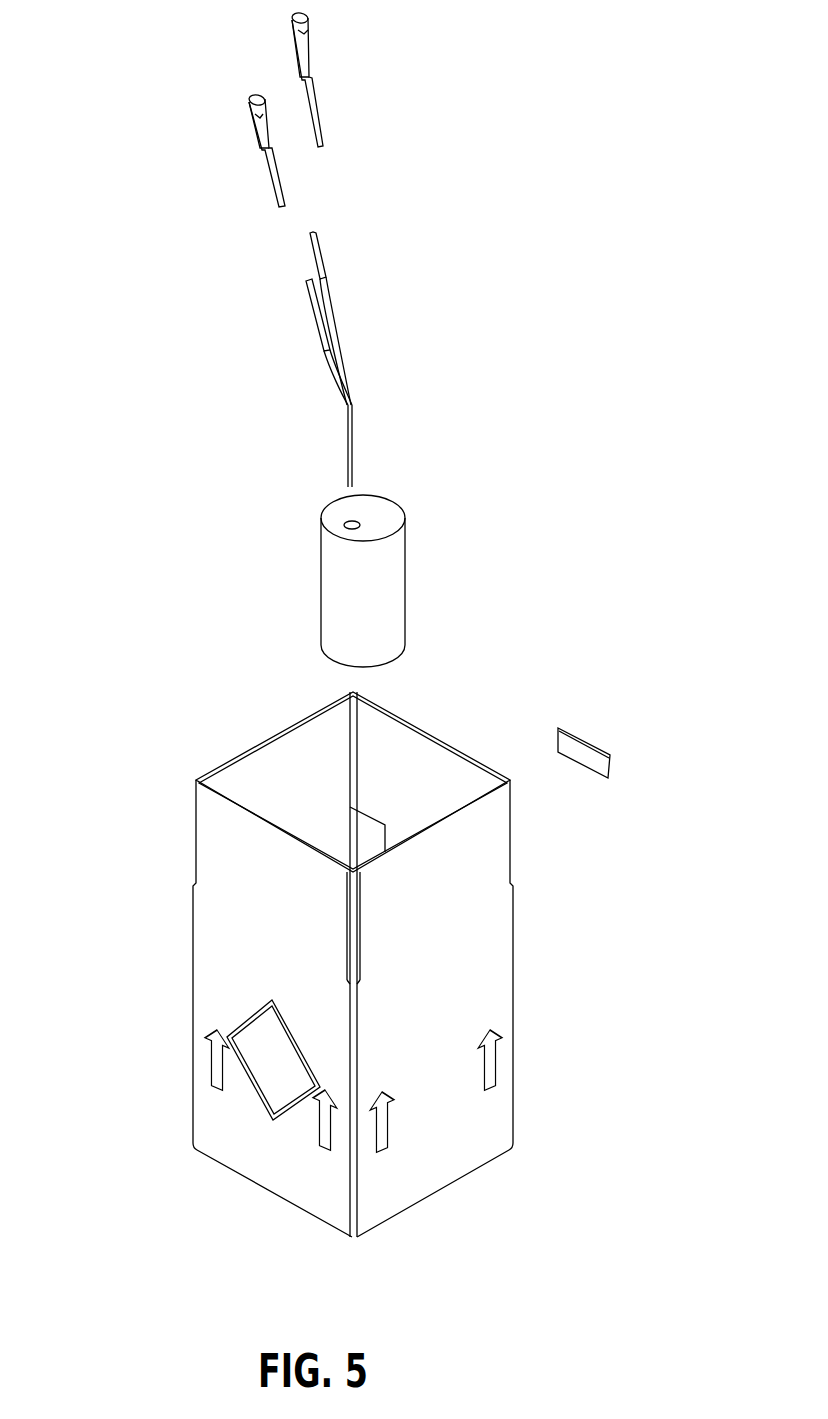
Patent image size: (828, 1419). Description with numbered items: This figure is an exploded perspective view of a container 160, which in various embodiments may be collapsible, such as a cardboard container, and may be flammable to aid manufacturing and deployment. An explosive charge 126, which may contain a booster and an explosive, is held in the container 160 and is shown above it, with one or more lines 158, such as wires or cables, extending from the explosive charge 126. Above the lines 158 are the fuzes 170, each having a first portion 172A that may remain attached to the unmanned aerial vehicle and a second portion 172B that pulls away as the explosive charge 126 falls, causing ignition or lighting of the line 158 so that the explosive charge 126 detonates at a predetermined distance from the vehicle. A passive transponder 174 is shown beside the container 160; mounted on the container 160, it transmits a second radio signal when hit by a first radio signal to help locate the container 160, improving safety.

The explosive charge 126 is at (405, 605).
The line 158 is at (410, 345).
The container 160 is at (152, 882).
The fuze 170 is at (412, 133).
The first portion 172A is at (313, 52).
The second portion 172B is at (308, 280).
The passive transponder 174 is at (610, 752).